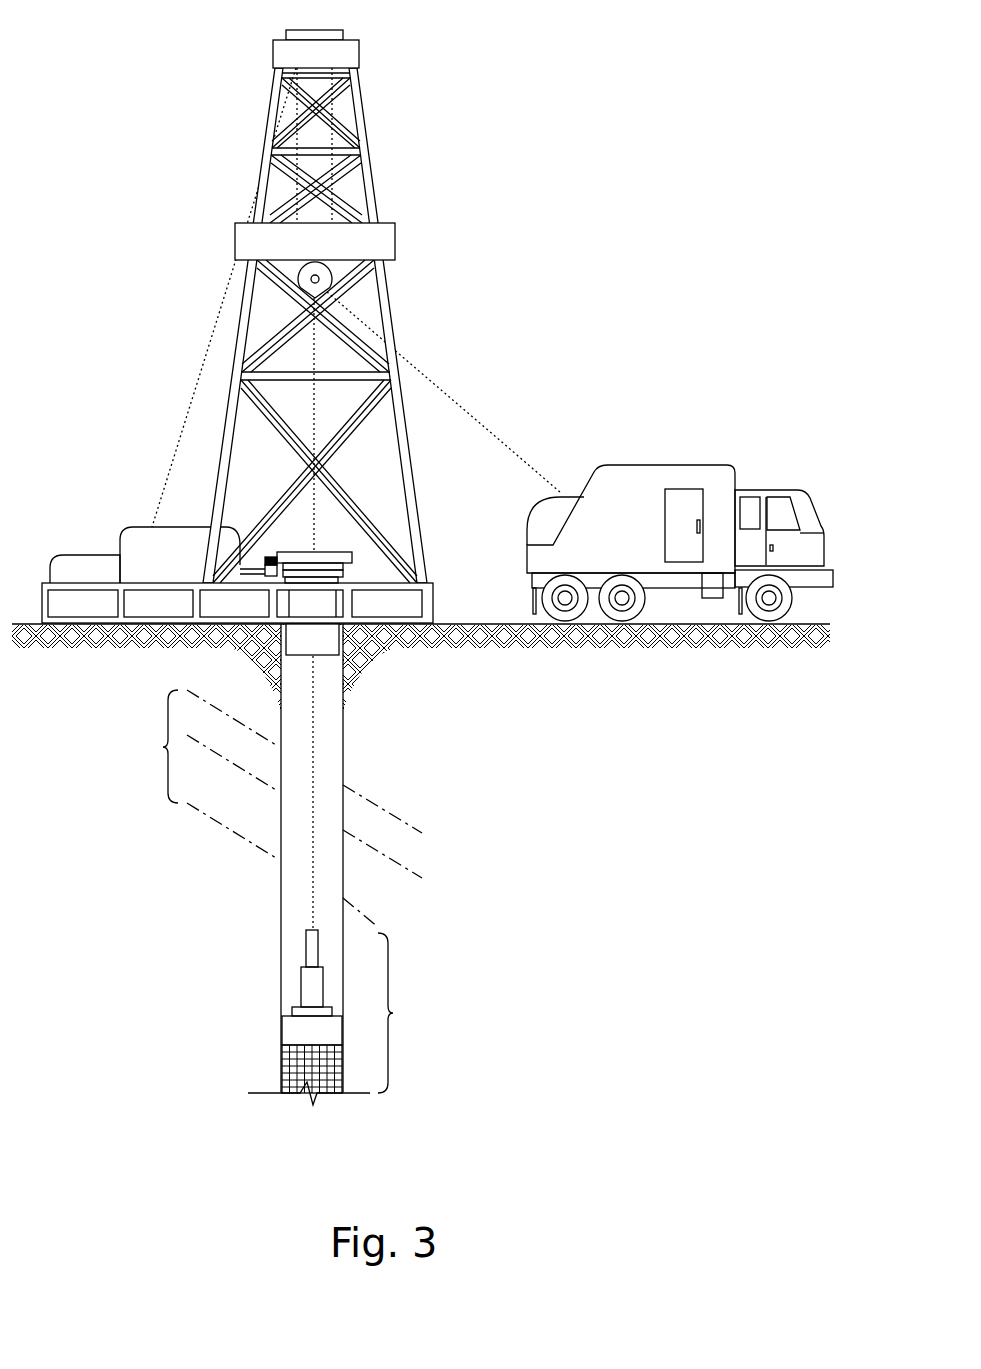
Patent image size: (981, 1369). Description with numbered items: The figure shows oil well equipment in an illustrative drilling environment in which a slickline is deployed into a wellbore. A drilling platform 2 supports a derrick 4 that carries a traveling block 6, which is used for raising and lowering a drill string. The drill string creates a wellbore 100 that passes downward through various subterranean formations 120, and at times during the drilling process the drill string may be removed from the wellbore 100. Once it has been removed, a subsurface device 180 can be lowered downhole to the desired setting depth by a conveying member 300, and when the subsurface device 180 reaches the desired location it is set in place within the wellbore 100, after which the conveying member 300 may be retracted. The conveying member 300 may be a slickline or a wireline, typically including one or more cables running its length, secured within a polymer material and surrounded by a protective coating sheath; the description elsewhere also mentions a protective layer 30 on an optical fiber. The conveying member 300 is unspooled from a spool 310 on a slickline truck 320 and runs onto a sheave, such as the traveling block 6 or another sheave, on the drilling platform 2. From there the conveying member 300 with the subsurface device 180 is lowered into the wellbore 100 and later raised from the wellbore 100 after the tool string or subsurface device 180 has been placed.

The drilling platform 2 is at (433, 605).
The derrick 4 is at (404, 417).
The traveling block 6 is at (323, 275).
The protective layer 30 is at (313, 898).
The wellbore 100 is at (343, 743).
The subterranean formations 120 is at (263, 808).
The subsurface device 180 is at (345, 1017).
The conveying member 300 is at (494, 438).
The spool 310 is at (571, 495).
The slickline truck 320 is at (660, 465).